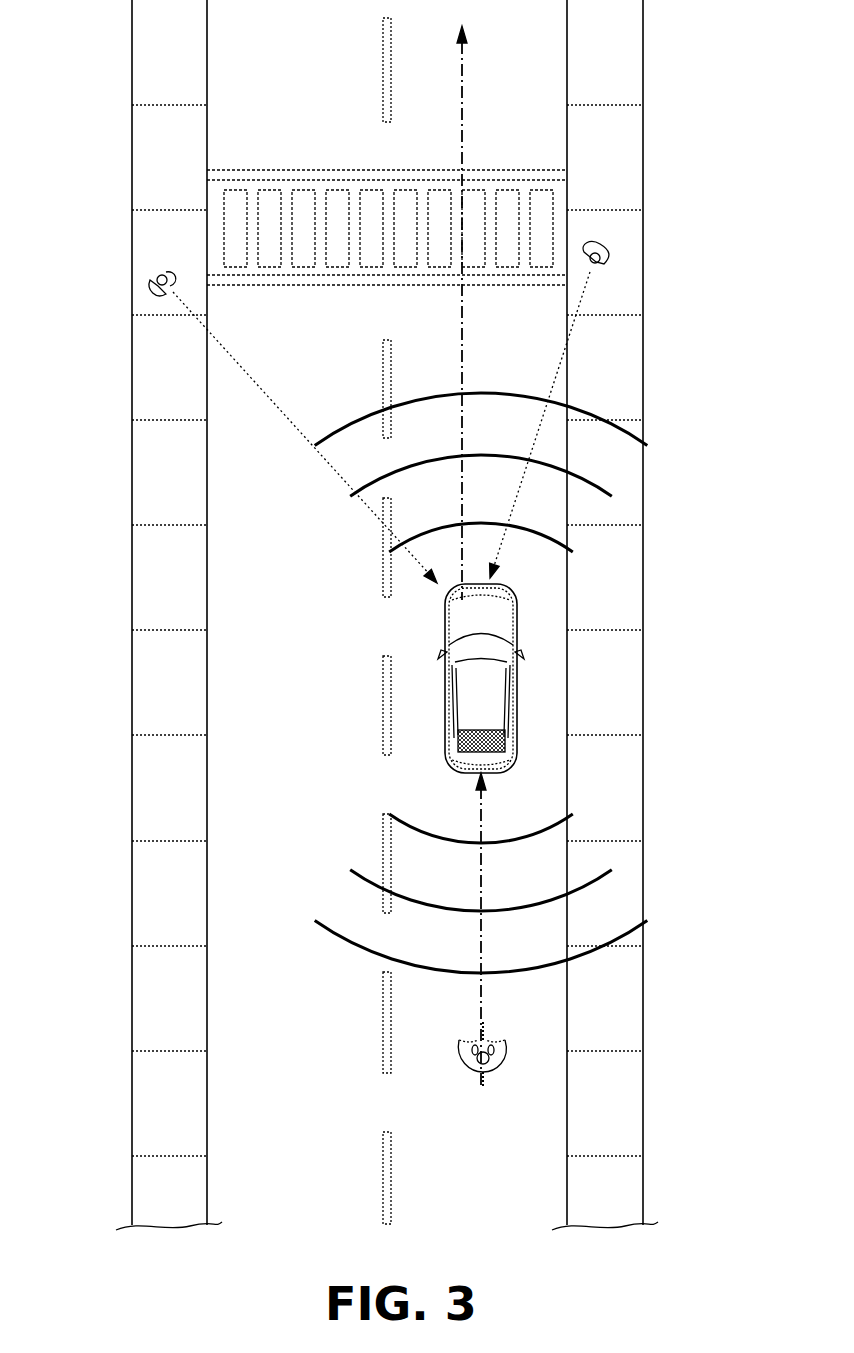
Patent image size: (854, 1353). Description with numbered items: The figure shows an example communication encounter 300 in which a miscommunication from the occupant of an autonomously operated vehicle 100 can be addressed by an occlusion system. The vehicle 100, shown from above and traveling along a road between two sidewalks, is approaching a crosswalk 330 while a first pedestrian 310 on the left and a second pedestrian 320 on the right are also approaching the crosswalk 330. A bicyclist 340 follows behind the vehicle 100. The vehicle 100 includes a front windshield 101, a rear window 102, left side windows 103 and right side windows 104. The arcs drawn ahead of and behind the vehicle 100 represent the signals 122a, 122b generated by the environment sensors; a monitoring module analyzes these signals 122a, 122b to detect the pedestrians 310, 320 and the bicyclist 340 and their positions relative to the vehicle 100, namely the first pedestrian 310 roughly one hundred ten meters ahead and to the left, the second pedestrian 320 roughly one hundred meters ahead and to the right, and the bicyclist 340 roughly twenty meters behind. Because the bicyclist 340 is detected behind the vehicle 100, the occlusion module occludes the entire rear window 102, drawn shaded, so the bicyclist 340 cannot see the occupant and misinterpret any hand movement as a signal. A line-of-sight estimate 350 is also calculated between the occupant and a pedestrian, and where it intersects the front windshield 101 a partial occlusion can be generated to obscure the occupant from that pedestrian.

The vehicle 100 is at (476, 686).
The front windshield 101 is at (462, 641).
The rear window 102 is at (455, 748).
The left side windows 103 is at (448, 668).
The right side windows 104 is at (507, 675).
The signal 122a is at (670, 403).
The signal 122b is at (670, 797).
The communication encounter 300 is at (409, 1114).
The first pedestrian 310 is at (150, 284).
The second pedestrian 320 is at (612, 258).
The crosswalk 330 is at (328, 170).
The bicyclist 340 is at (505, 1057).
The line-of-sight estimate 350 is at (462, 107).